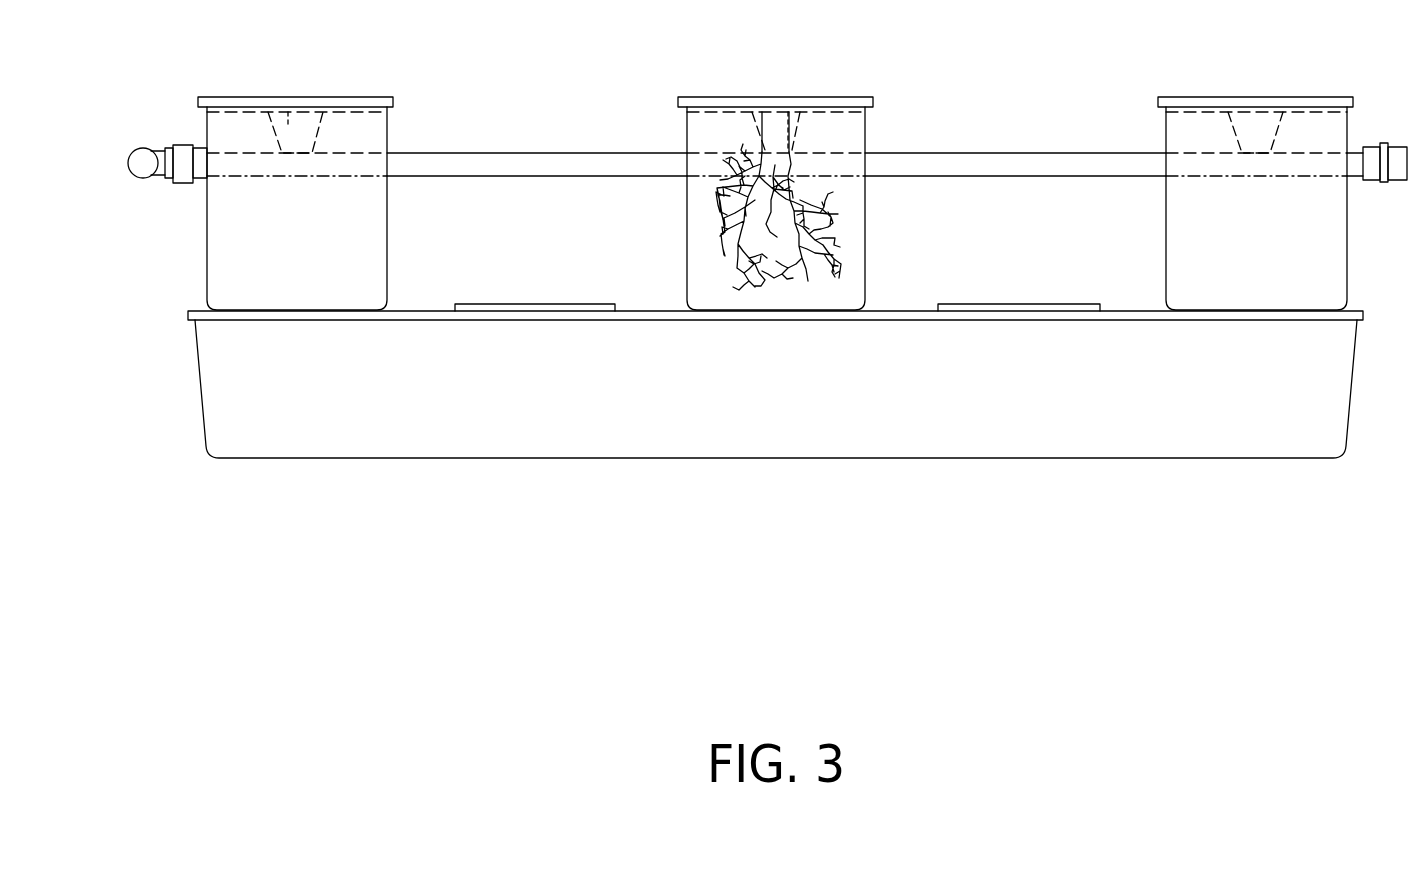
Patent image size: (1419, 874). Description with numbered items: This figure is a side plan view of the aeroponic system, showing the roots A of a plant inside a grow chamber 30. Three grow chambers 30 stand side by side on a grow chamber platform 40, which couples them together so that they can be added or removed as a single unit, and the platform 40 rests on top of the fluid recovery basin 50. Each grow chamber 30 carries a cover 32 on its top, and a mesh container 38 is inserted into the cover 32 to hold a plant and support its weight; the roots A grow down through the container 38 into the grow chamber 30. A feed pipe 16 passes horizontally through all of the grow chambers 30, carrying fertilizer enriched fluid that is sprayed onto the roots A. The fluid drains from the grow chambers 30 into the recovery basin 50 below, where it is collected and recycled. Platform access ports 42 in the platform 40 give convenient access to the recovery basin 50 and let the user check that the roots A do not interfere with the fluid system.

The feed pipes 16 is at (538, 160).
The grow chambers 30 is at (217, 245).
The covers 32 is at (358, 102).
The containers 38 is at (289, 109).
The grow chamber platform 40 is at (418, 309).
The platform access ports 42 is at (535, 304).
The fluid recovery basin 50 is at (343, 440).
The roots A is at (828, 171).